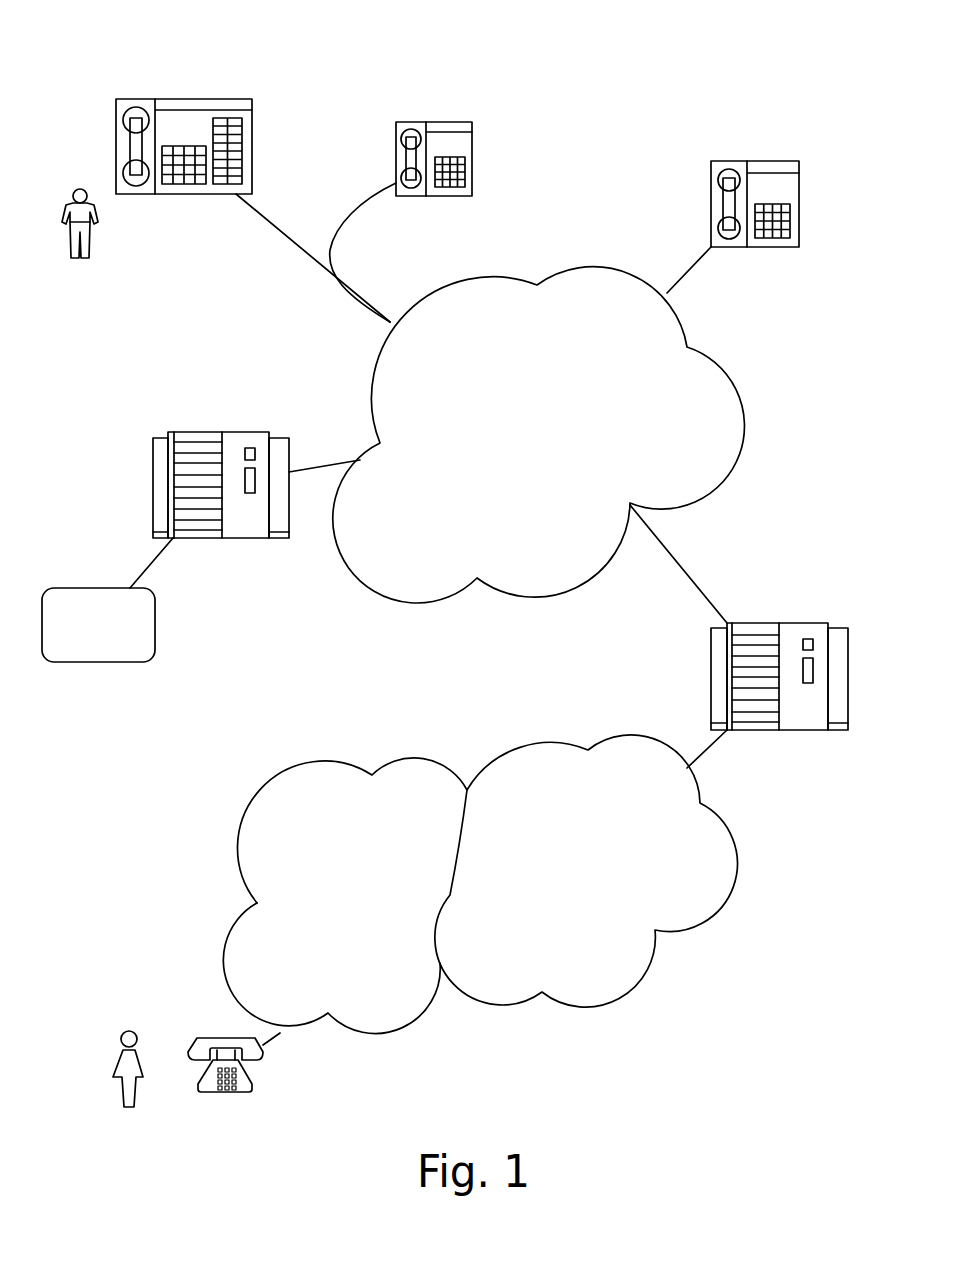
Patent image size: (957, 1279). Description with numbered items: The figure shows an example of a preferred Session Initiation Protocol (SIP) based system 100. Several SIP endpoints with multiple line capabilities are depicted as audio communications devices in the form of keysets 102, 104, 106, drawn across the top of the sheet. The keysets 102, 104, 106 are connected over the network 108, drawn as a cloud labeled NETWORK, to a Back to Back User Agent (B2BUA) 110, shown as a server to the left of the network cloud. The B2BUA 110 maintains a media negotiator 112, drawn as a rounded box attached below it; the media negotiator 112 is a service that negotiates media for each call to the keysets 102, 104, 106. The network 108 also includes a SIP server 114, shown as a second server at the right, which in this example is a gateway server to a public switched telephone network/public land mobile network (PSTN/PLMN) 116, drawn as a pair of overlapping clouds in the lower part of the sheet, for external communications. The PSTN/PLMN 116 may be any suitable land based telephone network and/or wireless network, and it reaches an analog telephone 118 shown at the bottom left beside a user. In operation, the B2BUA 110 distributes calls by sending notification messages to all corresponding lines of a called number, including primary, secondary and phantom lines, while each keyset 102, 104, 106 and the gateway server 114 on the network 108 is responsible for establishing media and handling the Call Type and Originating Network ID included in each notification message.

The Session Initiation Protocol (SIP) based system 100 is at (287, 630).
The keyset 102 is at (158, 99).
The keyset 104 is at (472, 121).
The keyset 106 is at (799, 161).
The network 108 is at (367, 378).
The Back to Back User Agent (B2BUA) 110 is at (167, 433).
The media negotiator 112 is at (75, 588).
The SIP server 114 is at (802, 622).
The public switched telephone network/public land mobile network (PSTN/PLMN) 116 is at (285, 783).
The analog telephone 118 is at (252, 1080).